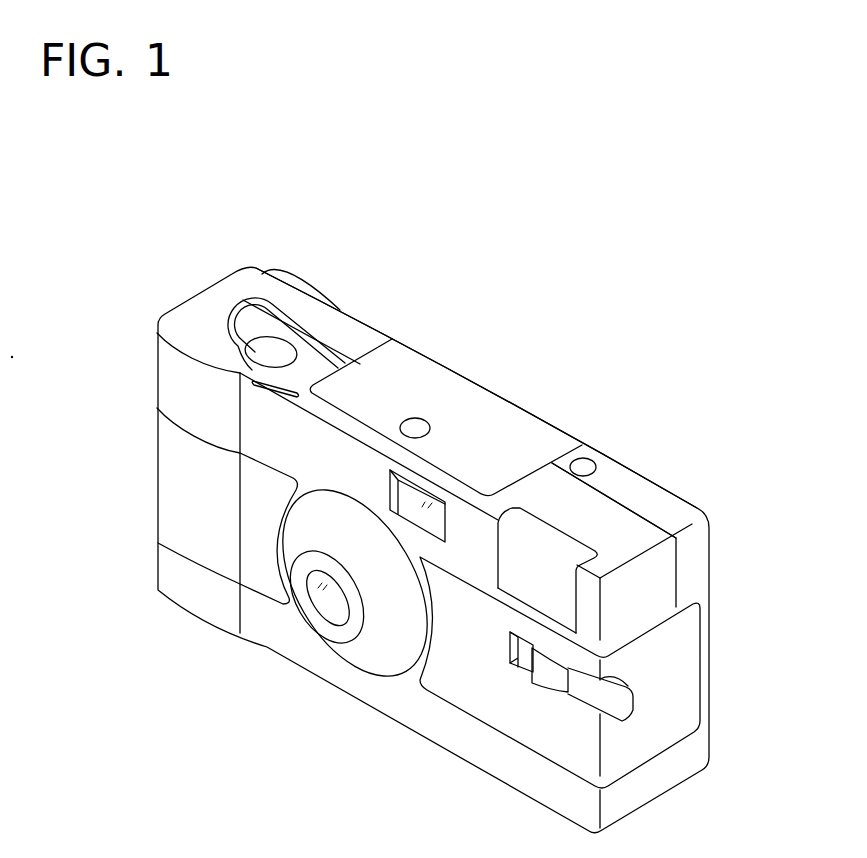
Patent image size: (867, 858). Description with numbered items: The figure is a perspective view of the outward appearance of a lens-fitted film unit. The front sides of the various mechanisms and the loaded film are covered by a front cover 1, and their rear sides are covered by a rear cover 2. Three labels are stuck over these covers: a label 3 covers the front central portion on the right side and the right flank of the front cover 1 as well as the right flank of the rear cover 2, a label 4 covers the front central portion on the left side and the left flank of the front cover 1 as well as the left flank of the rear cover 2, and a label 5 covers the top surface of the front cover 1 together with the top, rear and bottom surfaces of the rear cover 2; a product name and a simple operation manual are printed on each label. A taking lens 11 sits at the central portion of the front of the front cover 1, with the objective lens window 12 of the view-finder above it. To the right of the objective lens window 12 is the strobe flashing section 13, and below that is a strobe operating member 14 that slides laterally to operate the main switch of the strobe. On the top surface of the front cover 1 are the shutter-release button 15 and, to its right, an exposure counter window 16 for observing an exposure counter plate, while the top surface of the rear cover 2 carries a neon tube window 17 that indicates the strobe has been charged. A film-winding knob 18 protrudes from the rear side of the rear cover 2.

The front cover 1 is at (613, 553).
The rear cover 2 is at (657, 508).
The label 3 is at (465, 685).
The label 4 is at (185, 498).
The label 5 is at (492, 410).
The taking lens 11 is at (328, 612).
The objective lens window 12 is at (407, 493).
The strobe flashing section 13 is at (575, 557).
The strobe operating member 14 is at (543, 688).
The shutter-release button 15 is at (263, 350).
The exposure counter window 16 is at (412, 413).
The neon tube window 17 is at (583, 458).
The film-winding knob 18 is at (303, 272).